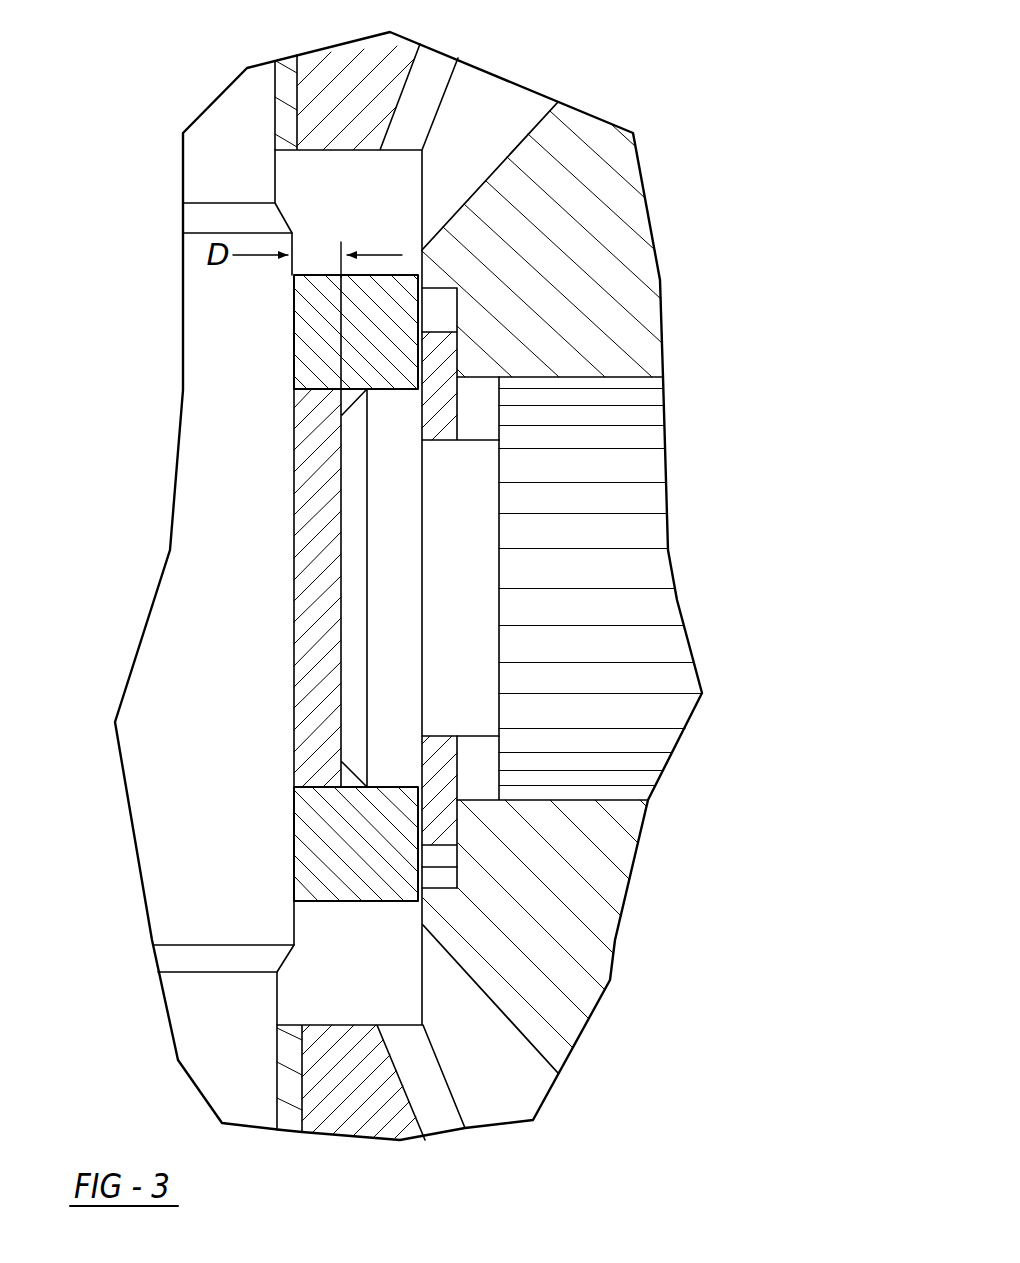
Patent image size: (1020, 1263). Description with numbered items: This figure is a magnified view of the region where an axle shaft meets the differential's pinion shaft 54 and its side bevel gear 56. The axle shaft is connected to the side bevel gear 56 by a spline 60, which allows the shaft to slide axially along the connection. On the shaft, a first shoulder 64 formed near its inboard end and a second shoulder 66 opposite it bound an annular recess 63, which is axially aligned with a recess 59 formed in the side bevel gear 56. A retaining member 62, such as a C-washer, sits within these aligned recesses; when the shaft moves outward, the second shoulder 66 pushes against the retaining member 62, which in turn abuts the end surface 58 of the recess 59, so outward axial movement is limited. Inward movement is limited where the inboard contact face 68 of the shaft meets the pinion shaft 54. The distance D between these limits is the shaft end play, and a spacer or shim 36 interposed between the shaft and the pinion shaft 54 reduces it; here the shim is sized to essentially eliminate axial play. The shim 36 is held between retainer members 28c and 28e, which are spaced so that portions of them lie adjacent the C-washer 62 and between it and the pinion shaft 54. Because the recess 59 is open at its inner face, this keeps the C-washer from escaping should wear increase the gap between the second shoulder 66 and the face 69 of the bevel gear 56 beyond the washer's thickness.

The pinion shaft 54 is at (157, 675).
The side bevel gear 56 is at (633, 312).
The face of bevel gear 69 is at (422, 213).
The retainer member 28c is at (382, 308).
The retainer member 28e is at (340, 901).
The spacer or shim 36 is at (312, 443).
The second shoulder 66 is at (422, 580).
The inboard contact face 68 is at (293, 638).
The annular recess 63 is at (488, 437).
The first shoulder 64 is at (499, 567).
The retaining member 62 is at (420, 823).
The end surface 58 is at (420, 865).
The spline 60 is at (582, 801).
The recess 59 is at (458, 888).